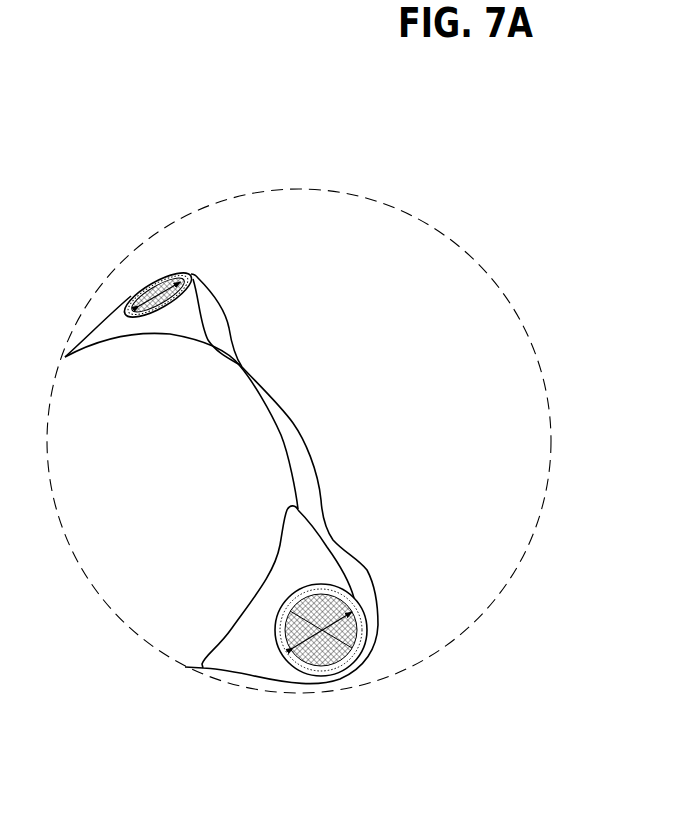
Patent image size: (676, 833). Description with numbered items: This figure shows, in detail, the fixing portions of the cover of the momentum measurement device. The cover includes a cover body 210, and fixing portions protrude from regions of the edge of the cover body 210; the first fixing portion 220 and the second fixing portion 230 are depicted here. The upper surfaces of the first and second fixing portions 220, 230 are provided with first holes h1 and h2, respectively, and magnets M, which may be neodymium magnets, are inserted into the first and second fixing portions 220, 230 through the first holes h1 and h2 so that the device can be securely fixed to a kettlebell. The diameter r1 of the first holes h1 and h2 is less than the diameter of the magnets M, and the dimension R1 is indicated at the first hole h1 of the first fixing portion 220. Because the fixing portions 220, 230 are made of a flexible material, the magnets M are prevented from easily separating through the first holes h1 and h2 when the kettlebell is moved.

The cover body 210 is at (242, 428).
The first fixing portion 220 is at (200, 280).
The second fixing portion 230 is at (360, 607).
The magnet M is at (167, 273).
The radius of first hole R1 is at (141, 285).
The first hole h1 is at (133, 286).
The first hole h2 is at (290, 606).
The diameter of first hole r1 is at (352, 648).